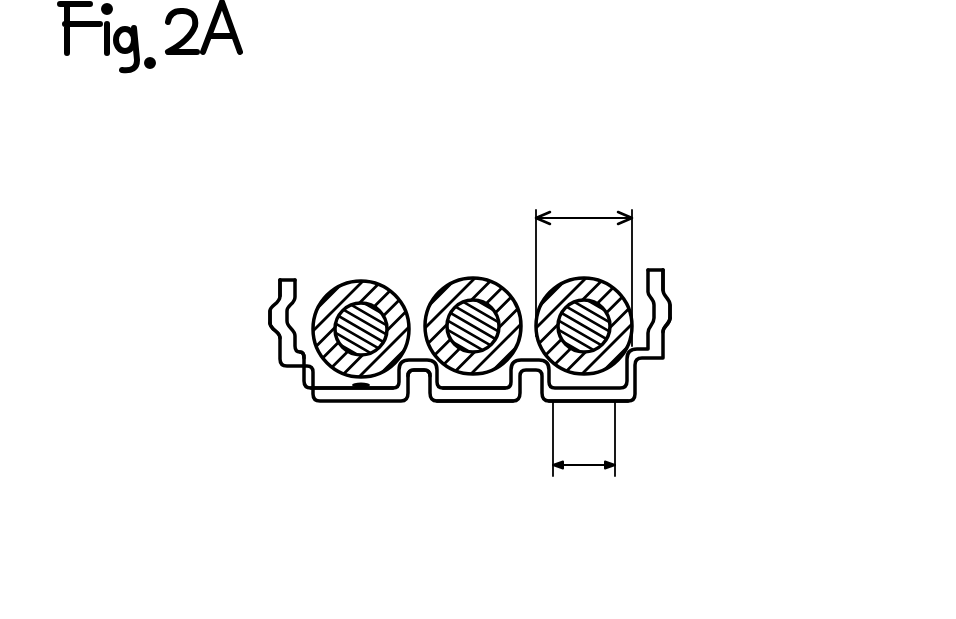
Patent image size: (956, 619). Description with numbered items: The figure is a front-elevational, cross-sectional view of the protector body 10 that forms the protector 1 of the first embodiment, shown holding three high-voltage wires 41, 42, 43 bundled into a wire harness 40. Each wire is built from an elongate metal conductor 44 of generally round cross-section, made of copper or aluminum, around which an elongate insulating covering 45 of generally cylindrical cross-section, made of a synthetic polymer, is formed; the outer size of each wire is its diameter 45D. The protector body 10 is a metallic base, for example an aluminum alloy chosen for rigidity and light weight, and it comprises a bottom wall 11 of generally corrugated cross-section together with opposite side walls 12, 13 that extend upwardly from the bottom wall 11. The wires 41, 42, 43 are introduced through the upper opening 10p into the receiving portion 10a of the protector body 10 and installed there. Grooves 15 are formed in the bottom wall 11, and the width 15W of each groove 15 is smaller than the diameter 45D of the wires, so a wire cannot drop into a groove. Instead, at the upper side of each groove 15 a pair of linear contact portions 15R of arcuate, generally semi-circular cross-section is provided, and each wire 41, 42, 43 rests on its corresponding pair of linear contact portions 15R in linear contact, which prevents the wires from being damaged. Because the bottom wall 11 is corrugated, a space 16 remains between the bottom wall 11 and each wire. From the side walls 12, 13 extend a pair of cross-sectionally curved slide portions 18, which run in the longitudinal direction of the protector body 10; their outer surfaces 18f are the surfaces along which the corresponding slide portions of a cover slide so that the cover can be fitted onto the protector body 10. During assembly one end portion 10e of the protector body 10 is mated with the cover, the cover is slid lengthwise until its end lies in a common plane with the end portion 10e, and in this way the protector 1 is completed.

The protector 1 is at (720, 115).
The protector body 10 is at (672, 276).
The receiving portion 10a is at (297, 278).
The upper opening 10p is at (653, 266).
The one end portion 10e is at (642, 402).
The bottom wall 11 is at (448, 400).
The side wall 12 is at (281, 287).
The side wall 13 is at (665, 283).
The groove 15 is at (355, 390).
The linear contact portion 15R is at (309, 368).
The width of groove 15W is at (598, 467).
The space 16 is at (463, 382).
The slide portion 18 is at (273, 310).
The outer surface 18f is at (270, 327).
The wire harness 40 is at (518, 150).
The high-voltage wire 41 is at (360, 279).
The high-voltage wire 42 is at (467, 278).
The high-voltage wire 43 is at (553, 278).
The metal conductor 44 is at (351, 301).
The insulating covering 45 is at (327, 297).
The diameter of wire 45D is at (587, 213).